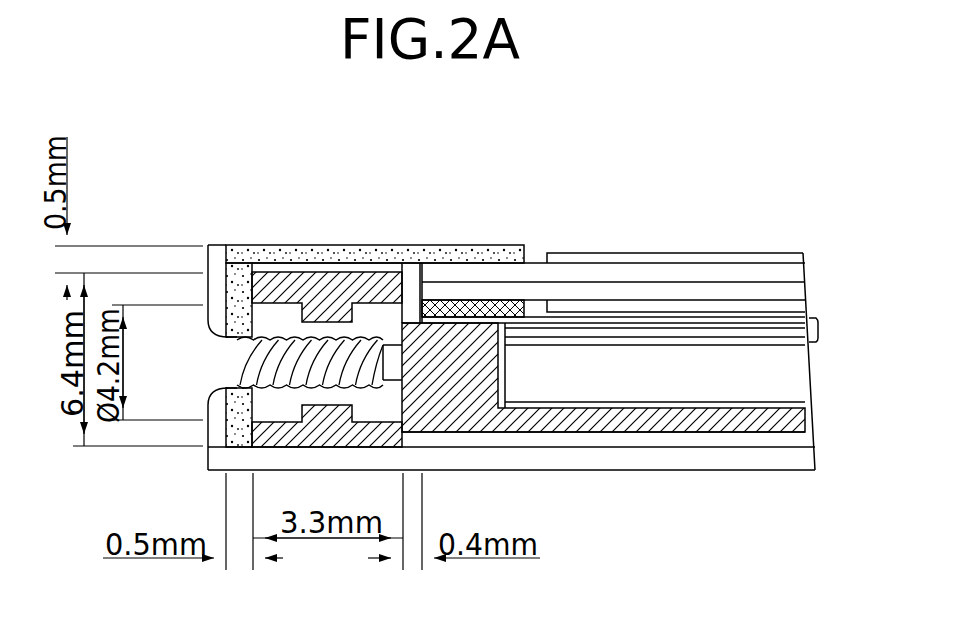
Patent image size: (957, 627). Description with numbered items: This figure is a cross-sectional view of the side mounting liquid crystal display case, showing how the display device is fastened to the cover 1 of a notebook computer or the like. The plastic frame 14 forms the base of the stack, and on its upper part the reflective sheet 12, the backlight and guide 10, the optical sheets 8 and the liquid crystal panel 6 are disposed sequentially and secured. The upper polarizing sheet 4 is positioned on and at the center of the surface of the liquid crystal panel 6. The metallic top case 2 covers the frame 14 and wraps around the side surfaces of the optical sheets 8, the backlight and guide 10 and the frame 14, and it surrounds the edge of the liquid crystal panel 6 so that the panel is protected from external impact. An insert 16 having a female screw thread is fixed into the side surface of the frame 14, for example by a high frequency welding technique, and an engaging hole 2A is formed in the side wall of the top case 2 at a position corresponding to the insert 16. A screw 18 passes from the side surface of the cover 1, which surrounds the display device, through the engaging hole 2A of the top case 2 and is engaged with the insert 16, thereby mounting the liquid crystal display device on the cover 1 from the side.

The cover 1 is at (220, 252).
The top case 2 is at (460, 252).
The engaging hole 2A is at (250, 337).
The polarizing sheet 4 is at (793, 255).
The liquid crystal panel 6 is at (800, 293).
The optical sheets 8 is at (818, 328).
The backlight and guide 10 is at (780, 362).
The reflective sheet 12 is at (810, 403).
The frame 14 is at (808, 425).
The insert 16 is at (258, 413).
The screw 18 is at (215, 366).